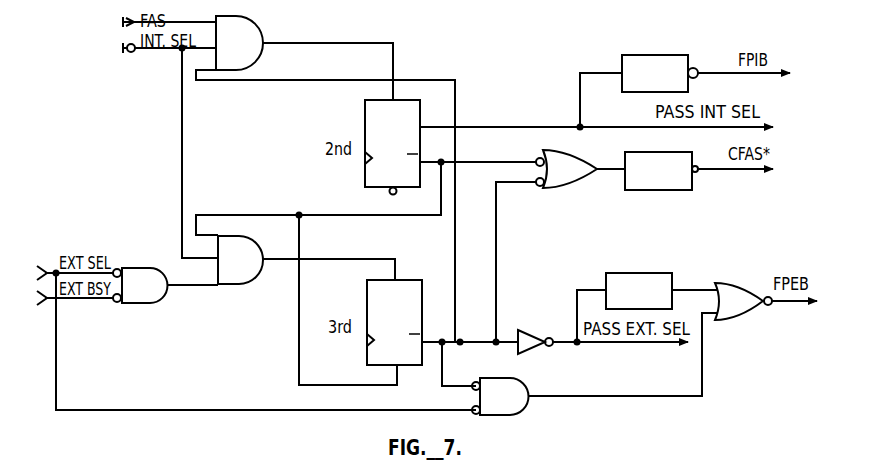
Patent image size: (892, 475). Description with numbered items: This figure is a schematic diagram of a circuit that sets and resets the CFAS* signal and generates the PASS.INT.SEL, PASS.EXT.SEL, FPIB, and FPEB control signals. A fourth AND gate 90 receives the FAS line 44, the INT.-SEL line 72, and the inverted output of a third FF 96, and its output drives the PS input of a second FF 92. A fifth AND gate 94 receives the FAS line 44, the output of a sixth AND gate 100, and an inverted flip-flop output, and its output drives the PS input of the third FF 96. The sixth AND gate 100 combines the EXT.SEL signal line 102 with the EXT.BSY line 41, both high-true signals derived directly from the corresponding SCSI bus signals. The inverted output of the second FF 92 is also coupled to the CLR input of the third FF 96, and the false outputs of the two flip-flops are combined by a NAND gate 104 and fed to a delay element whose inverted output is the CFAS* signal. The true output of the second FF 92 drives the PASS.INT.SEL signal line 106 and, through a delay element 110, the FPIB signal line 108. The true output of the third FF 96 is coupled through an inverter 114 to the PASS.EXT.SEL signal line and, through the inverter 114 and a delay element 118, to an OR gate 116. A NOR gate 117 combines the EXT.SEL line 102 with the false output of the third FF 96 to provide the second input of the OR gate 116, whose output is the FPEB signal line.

The FAS line 44 is at (128, 20).
The INT.-SEL line 72 is at (130, 53).
The fourth AND gate 90 is at (248, 28).
The second FF 92 is at (418, 105).
The fifth AND gate 94 is at (257, 238).
The third FF 96 is at (416, 285).
The sixth AND gate 100 is at (147, 268).
The EXT.SEL signal line 102 is at (119, 267).
The EXT.BSY line 41 is at (119, 304).
The NAND gate 104 is at (574, 158).
The PASS.INT.SEL signal line 106 is at (619, 129).
The FPIB signal line 108 is at (697, 68).
The delay element 110 is at (665, 55).
The inverter 114 is at (530, 337).
The OR gate 116 is at (722, 283).
The NOR gate 117 is at (526, 381).
The delay element 118 is at (651, 273).